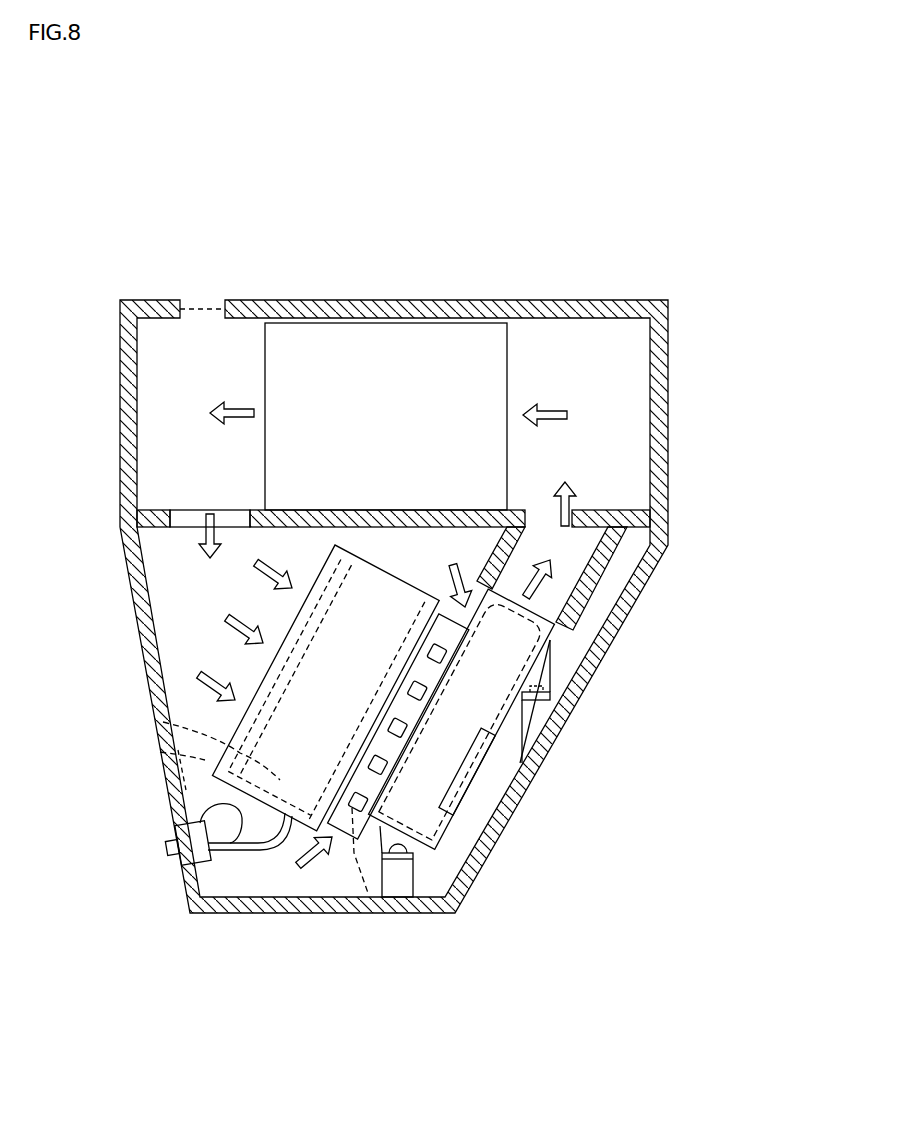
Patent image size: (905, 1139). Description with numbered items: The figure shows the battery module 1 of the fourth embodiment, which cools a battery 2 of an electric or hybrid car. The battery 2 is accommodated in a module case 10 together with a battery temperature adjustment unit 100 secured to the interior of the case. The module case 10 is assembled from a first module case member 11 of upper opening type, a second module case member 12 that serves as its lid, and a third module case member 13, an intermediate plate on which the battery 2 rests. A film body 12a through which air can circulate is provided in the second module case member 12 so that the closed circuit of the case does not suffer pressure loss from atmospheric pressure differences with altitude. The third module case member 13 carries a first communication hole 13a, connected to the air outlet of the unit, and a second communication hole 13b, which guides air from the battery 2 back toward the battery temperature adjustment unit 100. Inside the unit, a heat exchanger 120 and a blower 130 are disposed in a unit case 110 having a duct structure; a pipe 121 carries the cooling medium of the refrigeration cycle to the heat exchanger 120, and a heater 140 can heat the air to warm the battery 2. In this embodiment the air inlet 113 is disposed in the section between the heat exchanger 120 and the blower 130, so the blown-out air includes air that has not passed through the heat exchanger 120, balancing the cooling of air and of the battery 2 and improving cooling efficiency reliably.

The battery module 1 is at (185, 226).
The battery 2 is at (400, 429).
The module case 10 is at (513, 300).
The first module case member 11 is at (604, 653).
The second module case member 12 is at (270, 300).
The film body 12a is at (203, 310).
The third module case member 13 is at (305, 510).
The first communication hole 13a is at (588, 510).
The second communication hole 13b is at (190, 510).
The battery temperature adjustment unit 100 is at (485, 860).
The unit case 110 is at (398, 576).
The air inlet 113 is at (370, 897).
The heat exchanger 120 is at (178, 753).
The pipe 121 is at (178, 822).
The blower 130 is at (556, 733).
The heater 140 is at (160, 722).